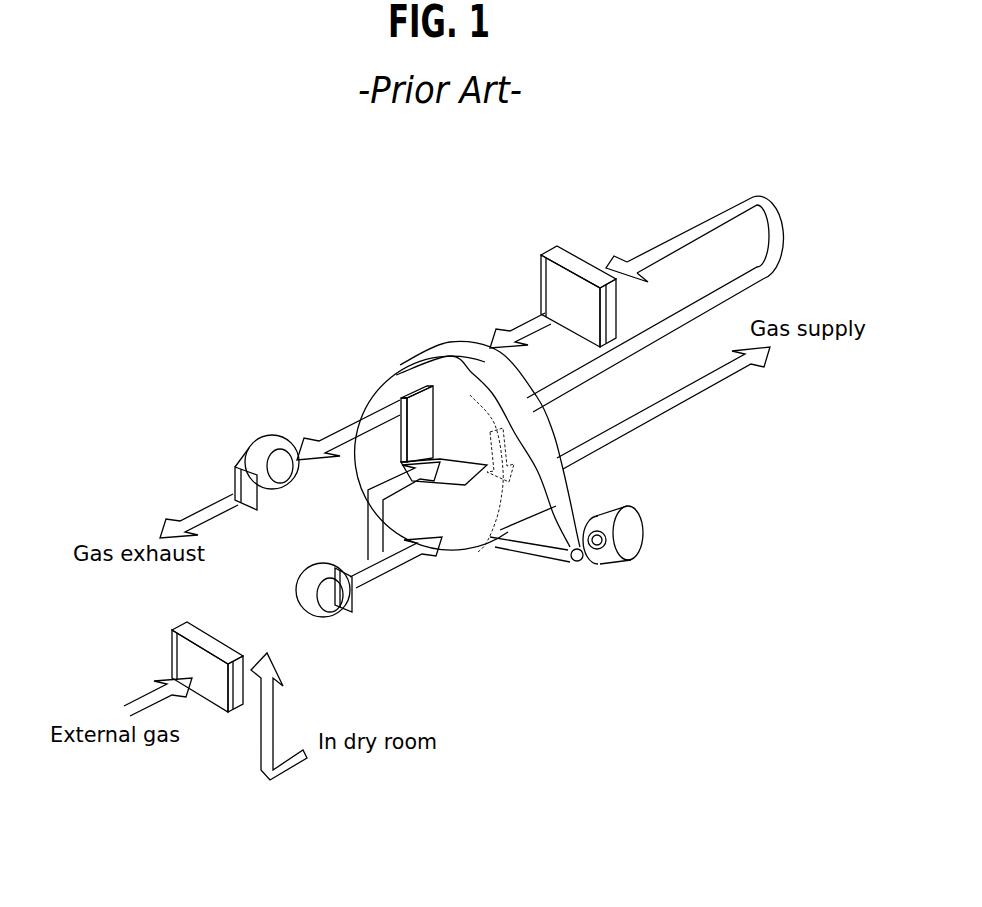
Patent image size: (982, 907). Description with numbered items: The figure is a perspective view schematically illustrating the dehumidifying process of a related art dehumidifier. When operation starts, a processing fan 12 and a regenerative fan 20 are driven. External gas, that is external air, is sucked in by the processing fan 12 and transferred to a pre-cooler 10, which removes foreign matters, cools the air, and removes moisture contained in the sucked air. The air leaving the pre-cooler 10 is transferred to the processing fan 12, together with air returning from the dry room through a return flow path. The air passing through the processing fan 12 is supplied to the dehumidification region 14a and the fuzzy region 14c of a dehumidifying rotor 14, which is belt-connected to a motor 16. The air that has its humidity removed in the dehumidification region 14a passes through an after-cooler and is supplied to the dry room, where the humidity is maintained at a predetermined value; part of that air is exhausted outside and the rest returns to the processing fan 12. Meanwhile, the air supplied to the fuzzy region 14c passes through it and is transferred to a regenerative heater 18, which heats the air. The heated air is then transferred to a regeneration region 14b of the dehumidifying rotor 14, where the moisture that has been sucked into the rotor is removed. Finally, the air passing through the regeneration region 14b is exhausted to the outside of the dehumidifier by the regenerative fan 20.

The pre-cooler 10 is at (180, 667).
The processing fan 12 is at (337, 612).
The dehumidifying rotor 14 is at (567, 431).
The dehumidification region 14a is at (457, 527).
The regeneration region 14b is at (392, 402).
The fuzzy region 14c is at (452, 423).
The motor 16 is at (618, 543).
The regenerative heater 18 is at (566, 262).
The regenerative fan 20 is at (258, 450).